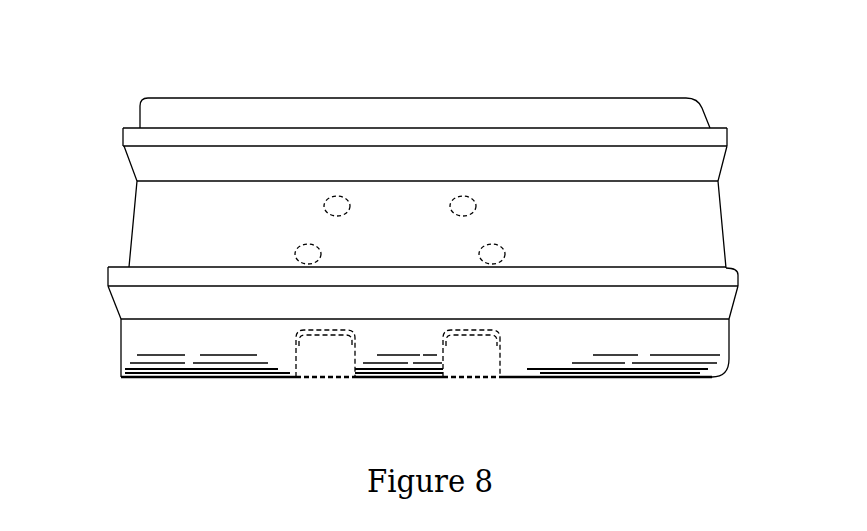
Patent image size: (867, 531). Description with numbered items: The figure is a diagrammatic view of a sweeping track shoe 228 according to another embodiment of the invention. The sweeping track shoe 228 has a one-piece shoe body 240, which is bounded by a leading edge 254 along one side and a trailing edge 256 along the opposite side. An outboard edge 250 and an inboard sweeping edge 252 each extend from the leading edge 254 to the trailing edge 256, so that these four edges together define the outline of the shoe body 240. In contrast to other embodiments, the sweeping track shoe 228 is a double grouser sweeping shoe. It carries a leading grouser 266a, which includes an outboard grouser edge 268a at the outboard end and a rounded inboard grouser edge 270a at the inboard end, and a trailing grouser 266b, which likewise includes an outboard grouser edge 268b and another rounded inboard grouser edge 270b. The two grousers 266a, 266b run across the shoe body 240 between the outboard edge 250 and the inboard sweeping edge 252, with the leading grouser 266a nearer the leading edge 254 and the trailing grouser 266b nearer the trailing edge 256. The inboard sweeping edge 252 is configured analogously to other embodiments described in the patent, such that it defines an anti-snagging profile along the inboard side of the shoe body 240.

The sweeping track shoe 228 is at (120, 80).
The trailing edge 256 is at (575, 98).
The trailing grouser 266b is at (652, 139).
The outboard grouser edge 268b is at (123, 131).
The rounded inboard grouser edge 270b is at (728, 130).
The one-piece shoe body 240 is at (137, 223).
The inboard sweeping edge 252 is at (707, 227).
The leading grouser 266a is at (652, 278).
The outboard grouser edge 268a is at (108, 273).
The rounded inboard grouser edge 270a is at (740, 270).
The outboard edge 250 is at (121, 328).
The leading edge 254 is at (577, 378).